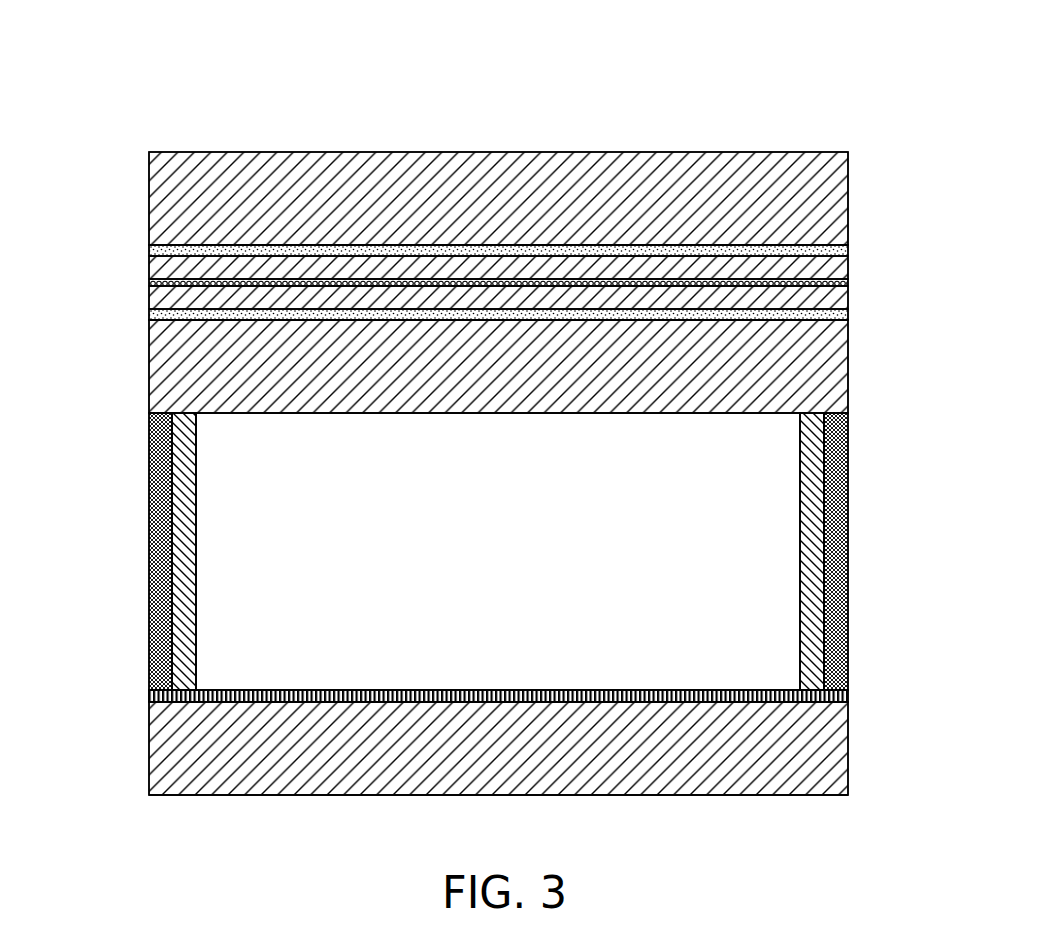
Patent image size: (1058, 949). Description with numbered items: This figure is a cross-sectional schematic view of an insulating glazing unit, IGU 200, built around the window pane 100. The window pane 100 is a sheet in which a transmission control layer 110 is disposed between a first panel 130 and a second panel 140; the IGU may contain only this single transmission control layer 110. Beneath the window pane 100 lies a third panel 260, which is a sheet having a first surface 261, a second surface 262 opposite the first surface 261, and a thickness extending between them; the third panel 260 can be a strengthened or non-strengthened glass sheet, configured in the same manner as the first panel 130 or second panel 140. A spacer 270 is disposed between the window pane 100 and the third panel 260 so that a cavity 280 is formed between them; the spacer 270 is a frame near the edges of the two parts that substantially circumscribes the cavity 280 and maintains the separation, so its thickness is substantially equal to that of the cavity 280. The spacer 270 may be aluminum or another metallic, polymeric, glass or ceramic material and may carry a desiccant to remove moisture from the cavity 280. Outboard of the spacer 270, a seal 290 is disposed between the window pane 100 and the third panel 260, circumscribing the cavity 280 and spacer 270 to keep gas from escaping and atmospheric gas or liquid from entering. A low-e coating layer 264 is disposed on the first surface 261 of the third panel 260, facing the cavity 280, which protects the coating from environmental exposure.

The IGU 200 is at (752, 49).
The window pane 100 is at (512, 130).
The first panel 130 is at (178, 162).
The transmission control layer 110 is at (137, 256).
The second panel 140 is at (177, 355).
The cavity 280 is at (758, 479).
The spacer 270 is at (848, 503).
The seal 290 is at (848, 575).
The first surface 261 is at (849, 692).
The low-e coating layer 264 is at (148, 695).
The third panel 260 is at (535, 768).
The second surface 262 is at (777, 797).